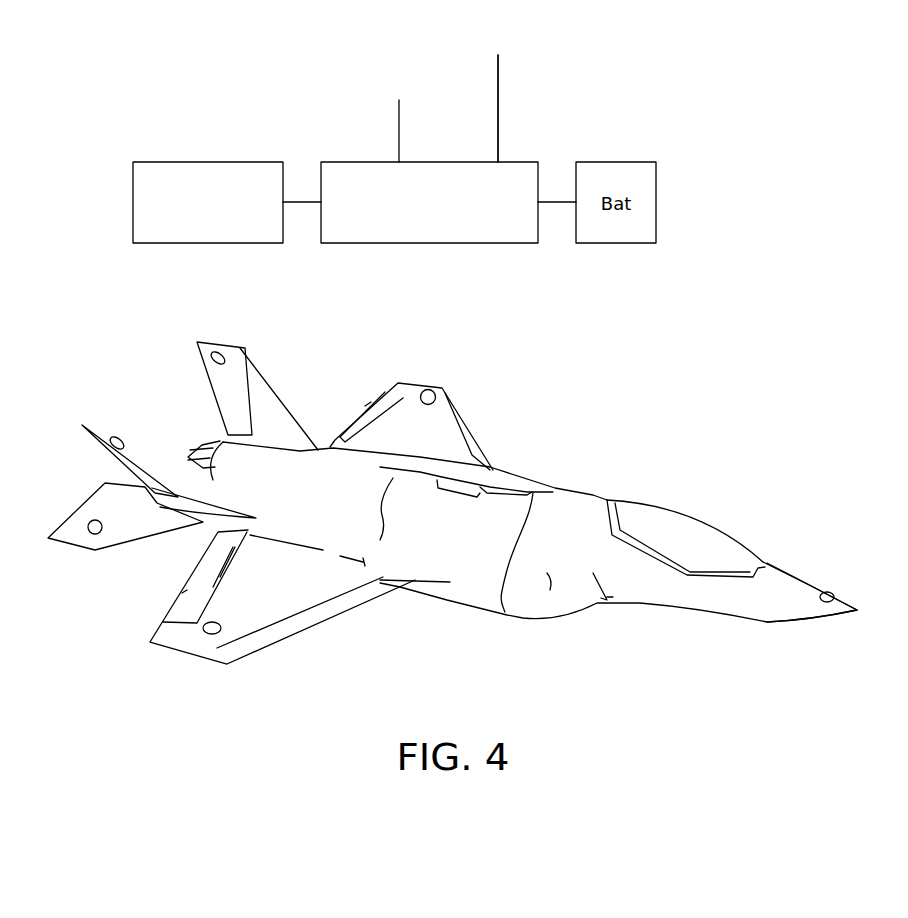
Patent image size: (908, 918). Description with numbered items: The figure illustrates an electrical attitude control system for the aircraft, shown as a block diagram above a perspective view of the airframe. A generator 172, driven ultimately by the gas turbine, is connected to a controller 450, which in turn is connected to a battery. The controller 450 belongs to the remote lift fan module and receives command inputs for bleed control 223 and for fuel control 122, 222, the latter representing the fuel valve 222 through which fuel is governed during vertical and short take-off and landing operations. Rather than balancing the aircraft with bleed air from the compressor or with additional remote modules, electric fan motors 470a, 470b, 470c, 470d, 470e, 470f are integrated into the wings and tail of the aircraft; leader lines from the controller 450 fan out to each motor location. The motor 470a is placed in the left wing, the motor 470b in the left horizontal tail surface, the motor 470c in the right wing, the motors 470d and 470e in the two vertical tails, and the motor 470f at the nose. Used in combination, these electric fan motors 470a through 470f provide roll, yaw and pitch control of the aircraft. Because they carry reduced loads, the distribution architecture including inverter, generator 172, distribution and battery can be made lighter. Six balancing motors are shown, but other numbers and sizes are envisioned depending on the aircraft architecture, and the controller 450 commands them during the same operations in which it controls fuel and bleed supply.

The generator 172 is at (209, 162).
The controller 450 is at (429, 202).
The bleed control 223 is at (398, 107).
The fuel control 122 is at (563, 94).
The valve 222 is at (563, 94).
The electric fan motor 470a is at (430, 243).
The electric fan motor 470b is at (430, 243).
The electric fan motor 470c is at (430, 243).
The electric fan motor 470d is at (430, 243).
The electric fan motor 470e is at (430, 243).
The electric fan motor 470f is at (430, 243).